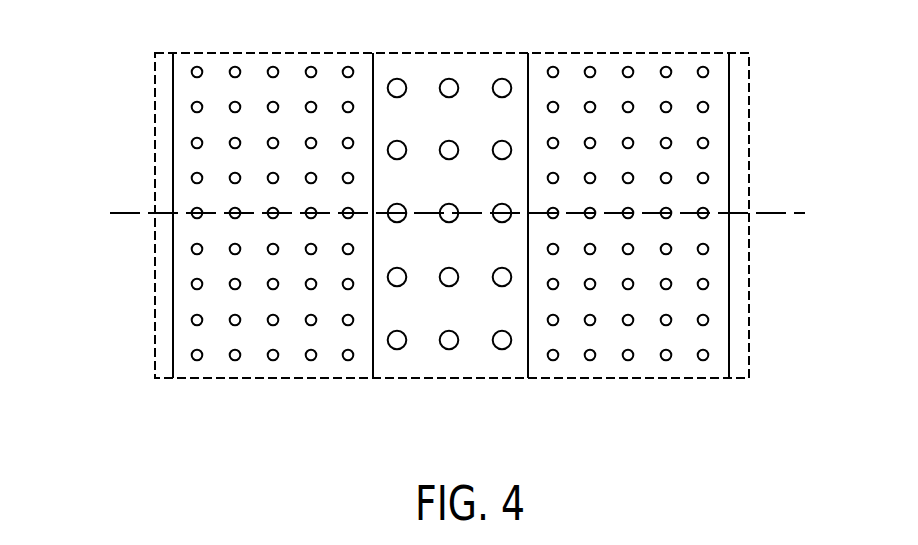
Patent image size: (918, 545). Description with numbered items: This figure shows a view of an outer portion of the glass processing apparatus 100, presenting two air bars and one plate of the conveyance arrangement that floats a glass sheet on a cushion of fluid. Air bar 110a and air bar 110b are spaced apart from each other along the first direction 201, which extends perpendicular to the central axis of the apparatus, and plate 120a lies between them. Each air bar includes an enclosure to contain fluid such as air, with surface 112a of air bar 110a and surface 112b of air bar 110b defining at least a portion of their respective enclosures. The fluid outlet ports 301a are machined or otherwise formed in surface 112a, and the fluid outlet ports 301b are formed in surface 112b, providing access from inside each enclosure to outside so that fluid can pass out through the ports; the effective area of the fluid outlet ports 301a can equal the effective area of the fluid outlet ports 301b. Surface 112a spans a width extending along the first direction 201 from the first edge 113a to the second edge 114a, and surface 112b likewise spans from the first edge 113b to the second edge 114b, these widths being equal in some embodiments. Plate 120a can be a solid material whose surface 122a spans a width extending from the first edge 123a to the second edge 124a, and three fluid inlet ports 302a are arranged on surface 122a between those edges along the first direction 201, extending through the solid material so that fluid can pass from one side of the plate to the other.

The glass processing apparatus 100 is at (122, 271).
The air bar 110a is at (225, 191).
The air bar 110b is at (676, 191).
The surface of air bar 112a is at (220, 108).
The surface of air bar 112b is at (563, 86).
The first edge of air bar 113a is at (173, 127).
The first edge of air bar 113b is at (527, 185).
The second edge of air bar 114a is at (374, 185).
The second edge of air bar 114b is at (730, 199).
The plate 120a is at (450, 179).
The surface of plate 122a is at (417, 72).
The first edge of plate 123a is at (394, 194).
The second edge of plate 124a is at (507, 194).
The first direction 201 is at (768, 217).
The fluid outlet ports 301a is at (247, 352).
The fluid outlet ports 301b is at (607, 355).
The fluid inlet ports 302a is at (419, 349).